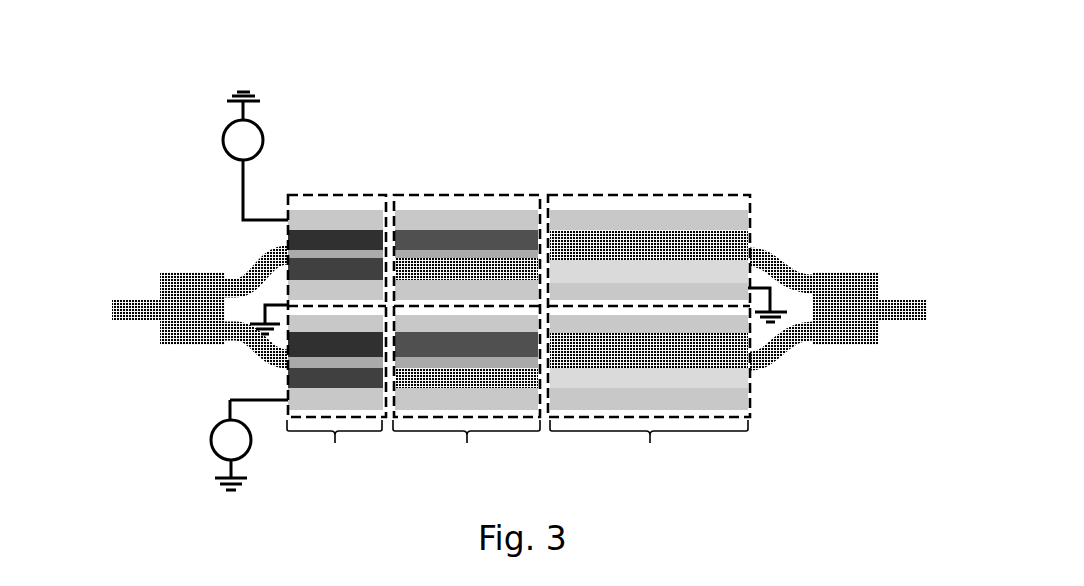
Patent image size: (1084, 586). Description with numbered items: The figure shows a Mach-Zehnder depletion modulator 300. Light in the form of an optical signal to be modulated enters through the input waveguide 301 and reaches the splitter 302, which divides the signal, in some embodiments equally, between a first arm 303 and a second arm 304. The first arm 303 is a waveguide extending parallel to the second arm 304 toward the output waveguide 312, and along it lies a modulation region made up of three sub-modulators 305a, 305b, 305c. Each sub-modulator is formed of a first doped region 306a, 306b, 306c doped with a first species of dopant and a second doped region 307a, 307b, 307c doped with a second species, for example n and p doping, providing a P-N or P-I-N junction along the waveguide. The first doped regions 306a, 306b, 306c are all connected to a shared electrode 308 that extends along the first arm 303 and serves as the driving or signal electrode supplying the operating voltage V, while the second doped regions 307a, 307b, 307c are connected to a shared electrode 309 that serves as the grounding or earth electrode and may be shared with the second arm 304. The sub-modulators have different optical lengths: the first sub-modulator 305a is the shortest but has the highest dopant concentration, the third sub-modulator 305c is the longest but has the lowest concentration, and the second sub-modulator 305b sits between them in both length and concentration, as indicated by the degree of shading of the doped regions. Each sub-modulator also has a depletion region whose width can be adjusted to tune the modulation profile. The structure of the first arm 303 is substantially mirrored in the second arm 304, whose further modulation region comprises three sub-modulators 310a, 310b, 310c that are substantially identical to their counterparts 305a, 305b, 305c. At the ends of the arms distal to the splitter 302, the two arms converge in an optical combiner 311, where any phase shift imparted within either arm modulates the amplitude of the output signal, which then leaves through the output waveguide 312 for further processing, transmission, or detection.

The Mach-Zehnder depletion modulator 300 is at (192, 78).
The input waveguide 301 is at (127, 302).
The splitter 302 is at (202, 280).
The first arm 303 is at (260, 262).
The second arm 304 is at (250, 343).
The first sub-modulator 305a is at (358, 195).
The second sub-modulator 305b is at (420, 195).
The third sub-modulator 305c is at (635, 197).
The first doped region 306a is at (305, 232).
The first doped region 306b is at (460, 237).
The first doped region 306c is at (667, 237).
The second doped region 307a is at (362, 272).
The second doped region 307b is at (520, 277).
The second doped region 307c is at (708, 270).
The shared electrode 308 is at (337, 215).
The shared electrode 309 is at (728, 295).
The first sub-modulator of the second arm 310a is at (360, 417).
The second sub-modulator of the second arm 310b is at (505, 415).
The third sub-modulator of the second arm 310c is at (725, 415).
The optical combiner 311 is at (848, 320).
The output waveguide 312 is at (909, 302).